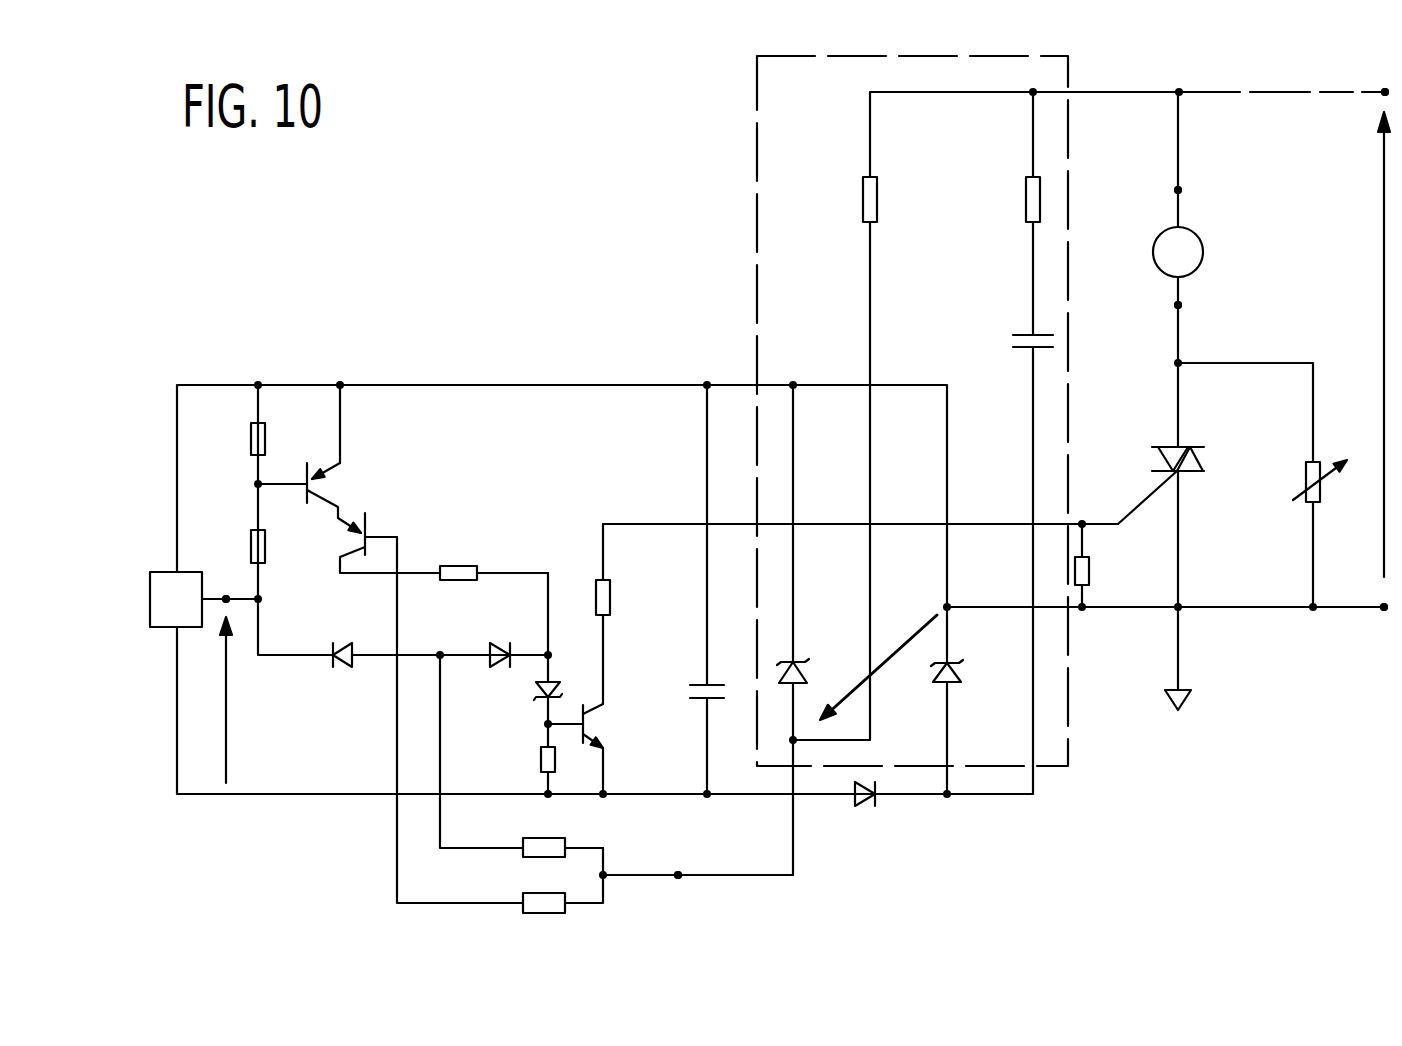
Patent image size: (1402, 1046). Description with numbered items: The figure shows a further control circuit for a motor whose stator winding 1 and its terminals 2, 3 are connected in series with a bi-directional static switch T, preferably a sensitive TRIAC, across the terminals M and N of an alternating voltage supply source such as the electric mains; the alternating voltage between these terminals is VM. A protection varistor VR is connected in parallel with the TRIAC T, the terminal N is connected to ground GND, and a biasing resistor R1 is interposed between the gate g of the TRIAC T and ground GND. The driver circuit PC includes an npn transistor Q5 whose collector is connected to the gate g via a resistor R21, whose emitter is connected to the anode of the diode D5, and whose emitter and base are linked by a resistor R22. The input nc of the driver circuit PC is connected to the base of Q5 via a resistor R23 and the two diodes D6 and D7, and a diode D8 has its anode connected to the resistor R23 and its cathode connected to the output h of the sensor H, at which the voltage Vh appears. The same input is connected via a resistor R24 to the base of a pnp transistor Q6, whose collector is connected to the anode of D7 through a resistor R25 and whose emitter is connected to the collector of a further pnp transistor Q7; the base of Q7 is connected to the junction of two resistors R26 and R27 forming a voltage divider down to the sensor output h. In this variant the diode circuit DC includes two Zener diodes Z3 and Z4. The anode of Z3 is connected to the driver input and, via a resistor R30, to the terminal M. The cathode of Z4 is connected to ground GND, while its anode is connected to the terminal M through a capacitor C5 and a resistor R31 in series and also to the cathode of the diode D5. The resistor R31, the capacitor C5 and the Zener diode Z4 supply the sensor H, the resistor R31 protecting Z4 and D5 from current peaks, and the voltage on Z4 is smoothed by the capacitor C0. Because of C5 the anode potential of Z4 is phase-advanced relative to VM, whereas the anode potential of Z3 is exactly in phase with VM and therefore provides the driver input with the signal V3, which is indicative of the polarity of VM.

The driver circuit PC is at (583, 430).
The diode circuit DC is at (757, 120).
The sensor H is at (165, 582).
The output of the sensor h is at (226, 594).
The Hall voltage Vh is at (229, 712).
The resistor R26 is at (251, 440).
The resistor R27 is at (251, 548).
The transistor Q7 is at (324, 475).
The transistor Q6 is at (345, 551).
The resistor R25 is at (457, 566).
The diode D8 is at (333, 668).
The diode D6 is at (491, 645).
The diode D7 is at (556, 680).
The resistor R21 is at (613, 592).
The capacitor C0 is at (703, 684).
The transistor Q5 is at (598, 714).
The resistor R22 is at (541, 760).
The resistor R23 is at (540, 846).
The resistor R24 is at (535, 902).
The control node nc is at (678, 874).
The Zener diode Z3 is at (797, 660).
The signal V3 is at (884, 656).
The Zener diode Z4 is at (955, 683).
The diode D5 is at (861, 806).
The resistor R30 is at (866, 203).
The resistor R31 is at (1028, 200).
The capacitor C5 is at (1025, 340).
The gate of the TRIAC g is at (1135, 505).
The biasing resistor R1 is at (1090, 570).
The bi-directional static switch T is at (1195, 457).
The protection varistor VR is at (1296, 481).
The ground GND is at (1185, 698).
The stator winding 1 is at (1200, 242).
The terminal of the stator winding 2 is at (1182, 192).
The terminal of the stator winding 3 is at (1178, 305).
The terminal of the supply source M is at (1383, 90).
The terminal of the supply source N is at (1384, 612).
The alternating voltage VM is at (1383, 268).